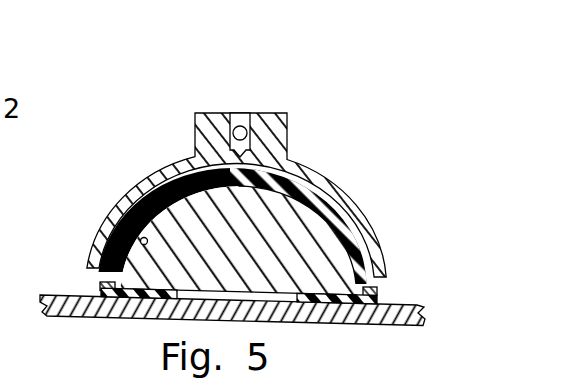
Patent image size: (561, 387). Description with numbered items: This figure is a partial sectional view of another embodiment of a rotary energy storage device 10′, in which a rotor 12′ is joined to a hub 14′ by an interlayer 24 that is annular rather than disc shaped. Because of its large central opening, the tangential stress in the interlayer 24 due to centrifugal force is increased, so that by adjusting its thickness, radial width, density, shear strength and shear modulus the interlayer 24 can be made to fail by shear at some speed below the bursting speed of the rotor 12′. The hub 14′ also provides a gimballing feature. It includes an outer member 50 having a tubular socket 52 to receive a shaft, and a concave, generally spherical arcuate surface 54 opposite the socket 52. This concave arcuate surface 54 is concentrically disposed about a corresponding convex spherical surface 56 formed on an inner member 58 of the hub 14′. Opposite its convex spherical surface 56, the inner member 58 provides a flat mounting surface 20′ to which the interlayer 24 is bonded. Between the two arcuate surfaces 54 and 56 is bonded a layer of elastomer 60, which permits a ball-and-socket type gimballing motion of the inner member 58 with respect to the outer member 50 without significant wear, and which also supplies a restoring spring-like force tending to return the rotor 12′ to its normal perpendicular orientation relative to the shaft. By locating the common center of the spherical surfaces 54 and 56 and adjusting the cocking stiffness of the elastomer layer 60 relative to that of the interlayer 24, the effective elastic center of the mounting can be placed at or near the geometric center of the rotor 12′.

The energy storage device 10′ is at (330, 129).
The rotor 12′ is at (389, 332).
The hub 14′ is at (334, 170).
The flat mounting surface 20′ is at (180, 293).
The interlayer 24 is at (94, 286).
The outer member 50 is at (178, 168).
The tubular socket 52 is at (220, 80).
The concave arcuate surface 54 is at (352, 229).
The convex spherical surface 56 is at (136, 247).
The inner member 58 is at (259, 249).
The layer of elastomer 60 is at (330, 214).